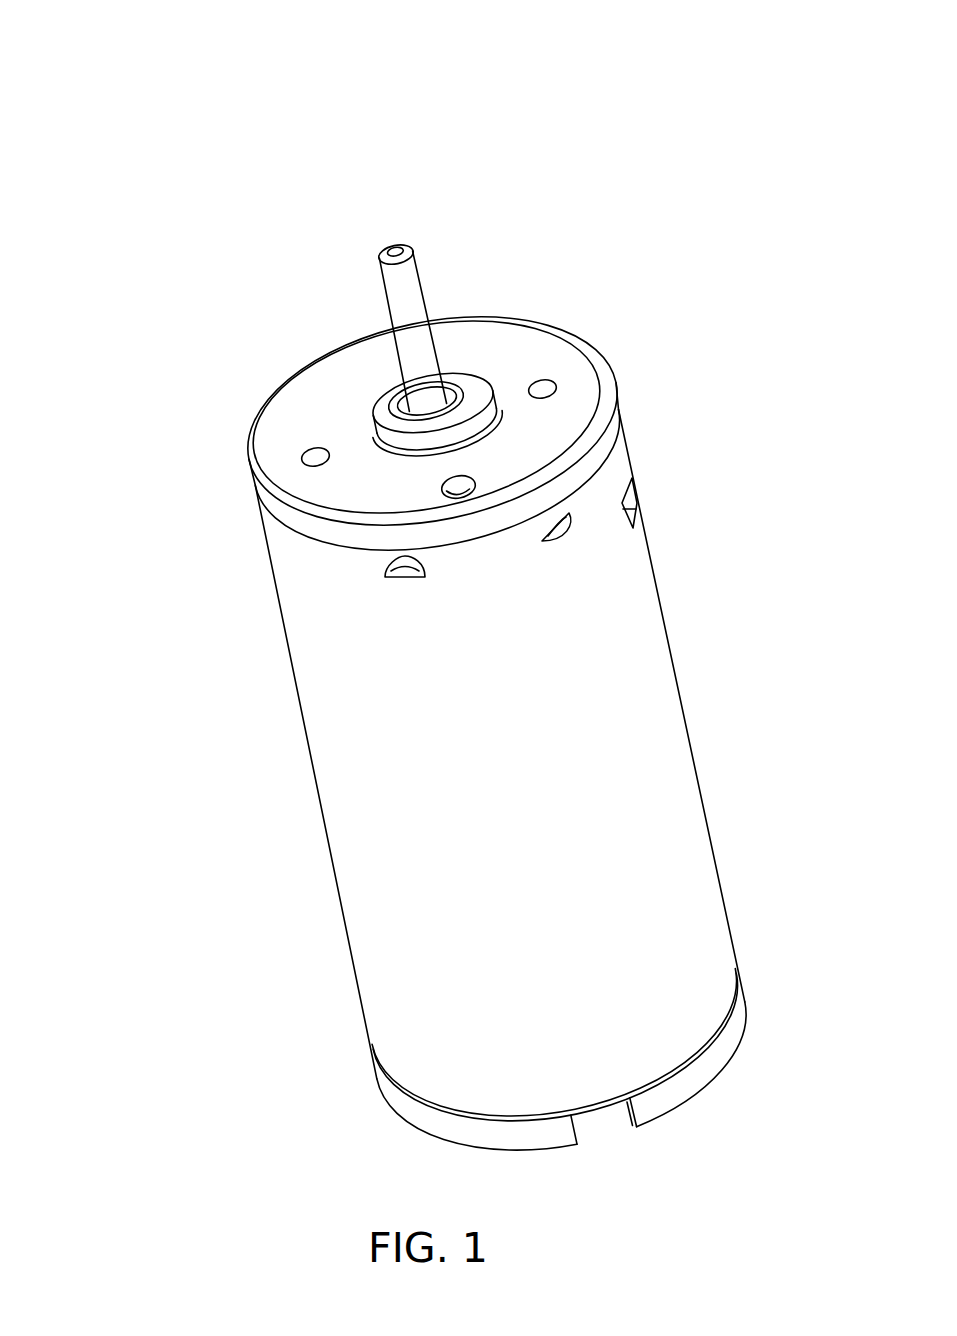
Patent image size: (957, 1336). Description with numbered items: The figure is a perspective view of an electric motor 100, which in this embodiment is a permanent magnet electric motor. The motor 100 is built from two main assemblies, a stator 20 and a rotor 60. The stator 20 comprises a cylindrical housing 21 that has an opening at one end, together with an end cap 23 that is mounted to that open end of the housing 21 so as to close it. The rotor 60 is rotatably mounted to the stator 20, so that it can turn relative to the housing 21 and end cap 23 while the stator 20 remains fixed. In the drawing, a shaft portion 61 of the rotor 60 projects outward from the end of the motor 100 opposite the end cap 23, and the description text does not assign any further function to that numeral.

The electric motor 100 is at (577, 66).
The stator 20 is at (461, 743).
The cylindrical housing 21 is at (627, 777).
The end cap 23 is at (678, 1090).
The rotor 60 is at (371, 315).
The shaft section 61 is at (415, 353).